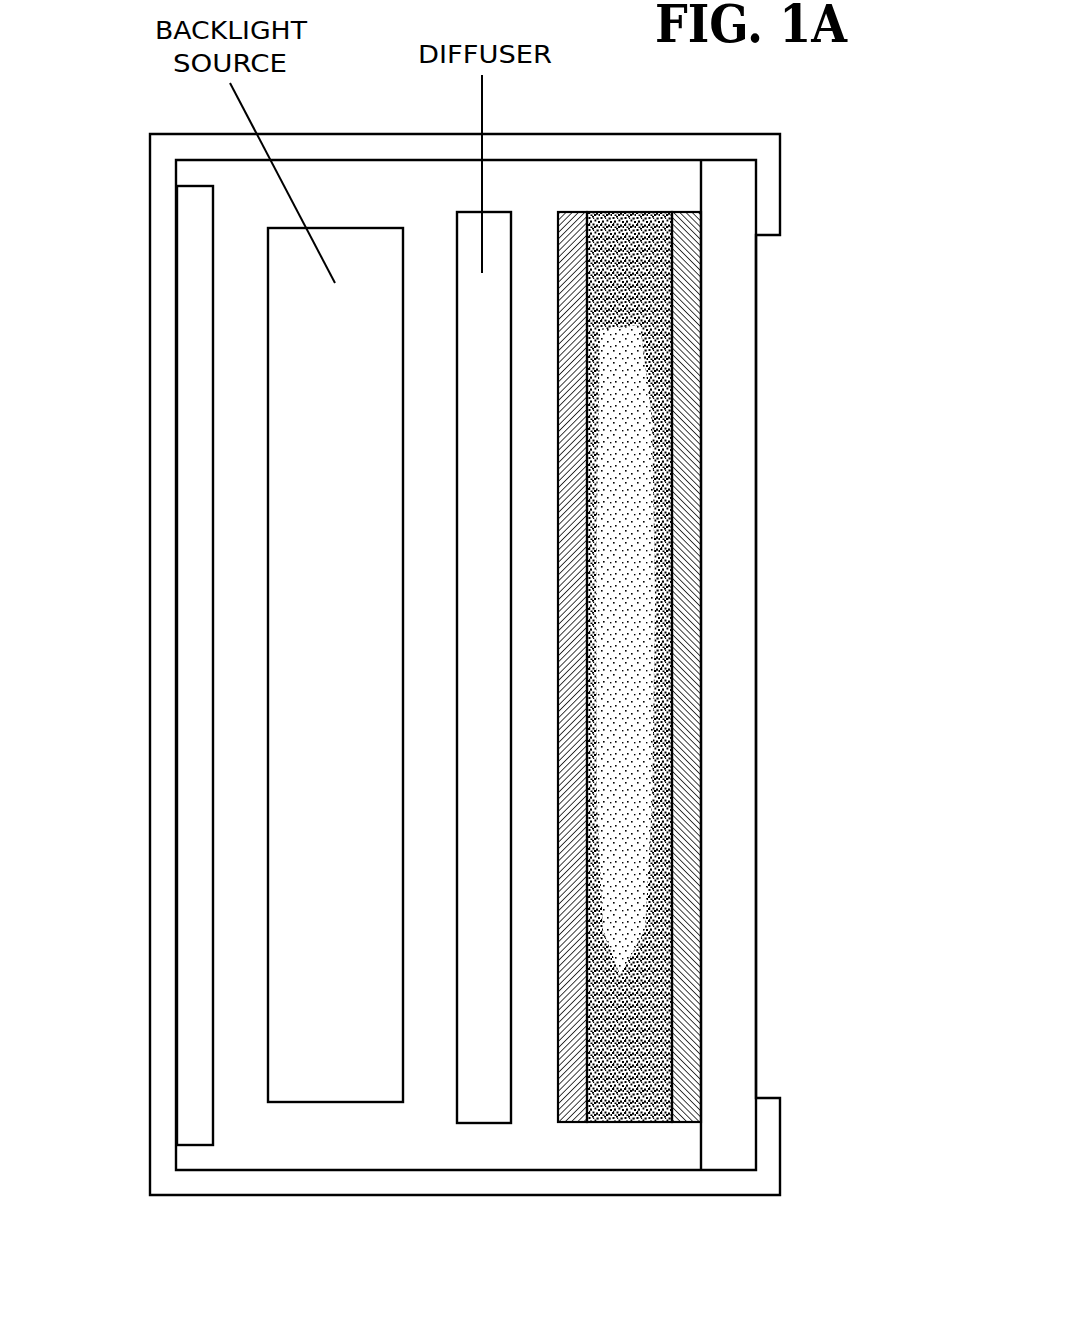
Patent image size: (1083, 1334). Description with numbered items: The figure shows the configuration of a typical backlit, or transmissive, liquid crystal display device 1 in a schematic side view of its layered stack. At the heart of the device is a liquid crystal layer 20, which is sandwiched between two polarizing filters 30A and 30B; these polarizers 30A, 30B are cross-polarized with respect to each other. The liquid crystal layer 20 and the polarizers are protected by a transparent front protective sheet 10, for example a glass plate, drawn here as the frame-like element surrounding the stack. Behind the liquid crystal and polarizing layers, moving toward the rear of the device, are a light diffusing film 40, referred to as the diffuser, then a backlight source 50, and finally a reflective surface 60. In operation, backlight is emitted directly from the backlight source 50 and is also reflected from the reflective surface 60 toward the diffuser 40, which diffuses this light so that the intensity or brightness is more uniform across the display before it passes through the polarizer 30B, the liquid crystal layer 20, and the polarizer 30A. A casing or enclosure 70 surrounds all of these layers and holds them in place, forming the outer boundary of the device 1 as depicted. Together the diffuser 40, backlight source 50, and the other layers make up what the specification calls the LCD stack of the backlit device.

The LCD device 1 is at (43, 130).
The transparent front protective sheet 10 is at (756, 666).
The liquid crystal layer 20 is at (633, 1004).
The polarizing filter 30A is at (702, 420).
The polarizing filter 30B is at (573, 212).
The light diffusing film 40 is at (484, 667).
The backlight source 50 is at (335, 665).
The reflective surface 60 is at (192, 863).
The casing or enclosure 70 is at (150, 717).